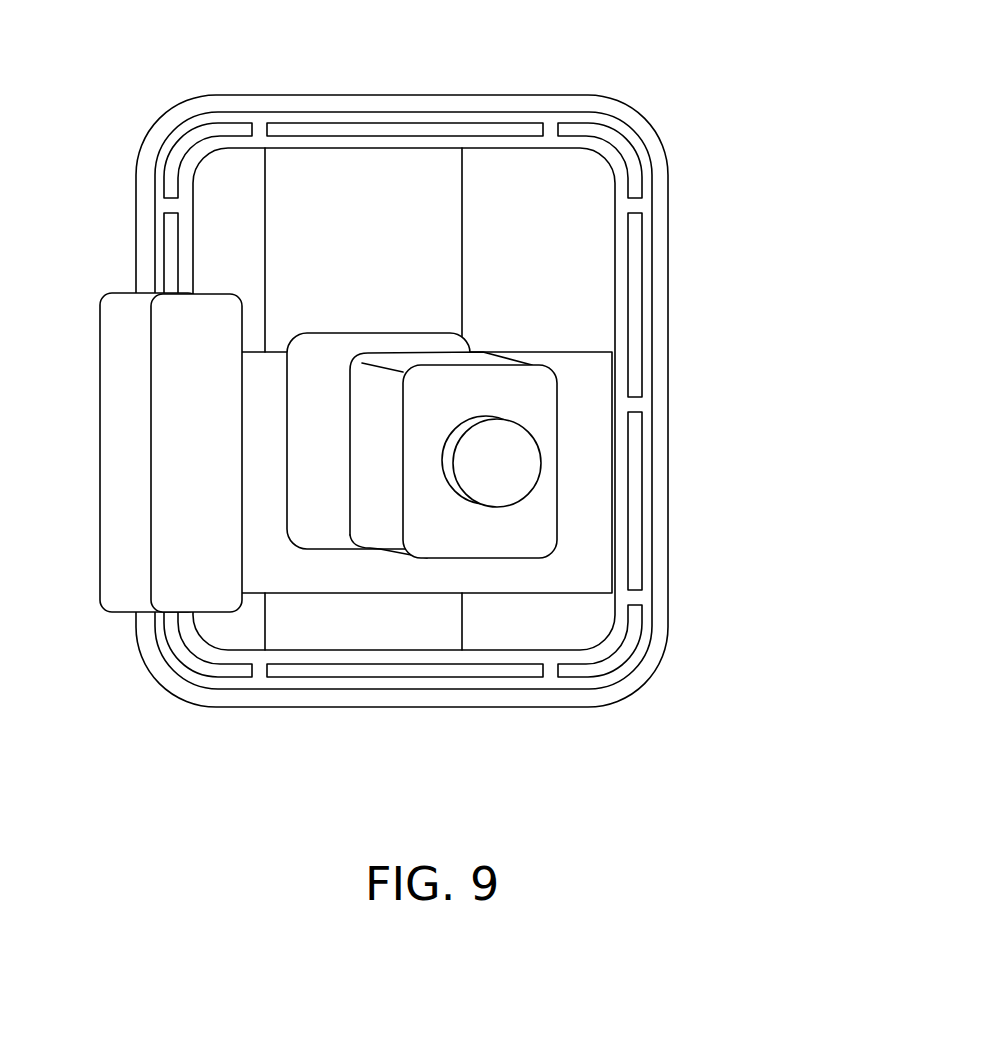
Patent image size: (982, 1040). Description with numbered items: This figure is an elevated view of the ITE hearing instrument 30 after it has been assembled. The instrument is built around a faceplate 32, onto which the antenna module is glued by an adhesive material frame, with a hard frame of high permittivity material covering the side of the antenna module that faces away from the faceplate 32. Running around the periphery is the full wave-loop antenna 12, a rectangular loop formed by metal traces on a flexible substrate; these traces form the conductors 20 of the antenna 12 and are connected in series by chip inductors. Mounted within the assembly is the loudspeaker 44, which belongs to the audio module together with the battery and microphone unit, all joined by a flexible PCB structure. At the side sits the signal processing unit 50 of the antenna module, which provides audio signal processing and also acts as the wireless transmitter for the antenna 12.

The full wave-loop antenna 12 is at (605, 123).
The faceplate 32 is at (660, 258).
The conductors 20 is at (633, 323).
The ITE hearing instrument 30 is at (720, 538).
The loudspeaker 44 is at (458, 521).
The signal processing unit 50 is at (195, 490).